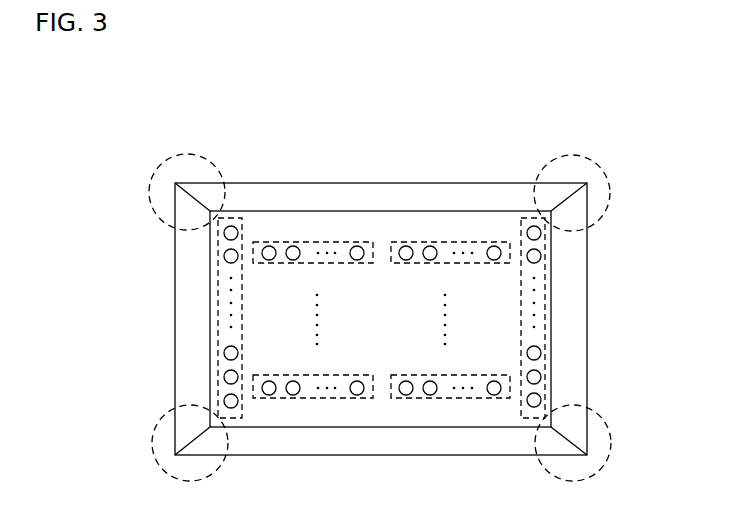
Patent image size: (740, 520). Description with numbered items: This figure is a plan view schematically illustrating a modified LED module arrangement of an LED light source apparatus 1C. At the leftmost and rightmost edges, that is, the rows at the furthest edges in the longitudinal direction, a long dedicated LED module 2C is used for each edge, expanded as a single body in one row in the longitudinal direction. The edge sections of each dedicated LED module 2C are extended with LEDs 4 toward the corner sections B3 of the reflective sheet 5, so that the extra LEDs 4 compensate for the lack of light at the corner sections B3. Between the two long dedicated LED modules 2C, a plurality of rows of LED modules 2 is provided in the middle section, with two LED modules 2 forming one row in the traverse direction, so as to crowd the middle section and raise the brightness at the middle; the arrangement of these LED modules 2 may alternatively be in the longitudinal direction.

The LED light source apparatus 1C is at (502, 153).
The LED module 2 is at (327, 241).
The long dedicated LED module 2C is at (217, 312).
The LED 4 is at (232, 226).
The reflective sheet 5 is at (430, 182).
The corner section B3 is at (180, 222).